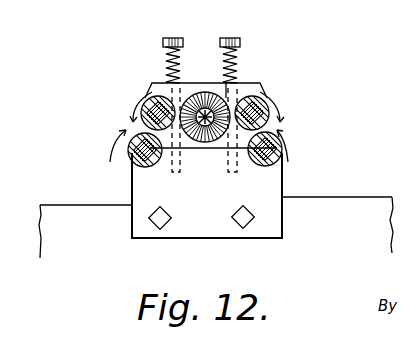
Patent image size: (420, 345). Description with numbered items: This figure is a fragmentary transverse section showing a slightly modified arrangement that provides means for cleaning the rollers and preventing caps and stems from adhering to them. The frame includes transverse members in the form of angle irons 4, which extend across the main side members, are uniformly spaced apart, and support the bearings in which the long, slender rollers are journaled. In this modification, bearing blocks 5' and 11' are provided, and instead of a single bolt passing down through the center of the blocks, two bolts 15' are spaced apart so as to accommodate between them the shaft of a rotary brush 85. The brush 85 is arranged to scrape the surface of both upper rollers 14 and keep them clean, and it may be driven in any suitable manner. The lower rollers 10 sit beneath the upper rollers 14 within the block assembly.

The angle iron 4 is at (362, 208).
The bearing block 5' is at (225, 193).
The lower guide rollers 10 is at (130, 159).
The bearing block 11' is at (214, 104).
The upper roller 14 is at (150, 98).
The bolt 15' is at (201, 48).
The rotary brush 85 is at (200, 90).